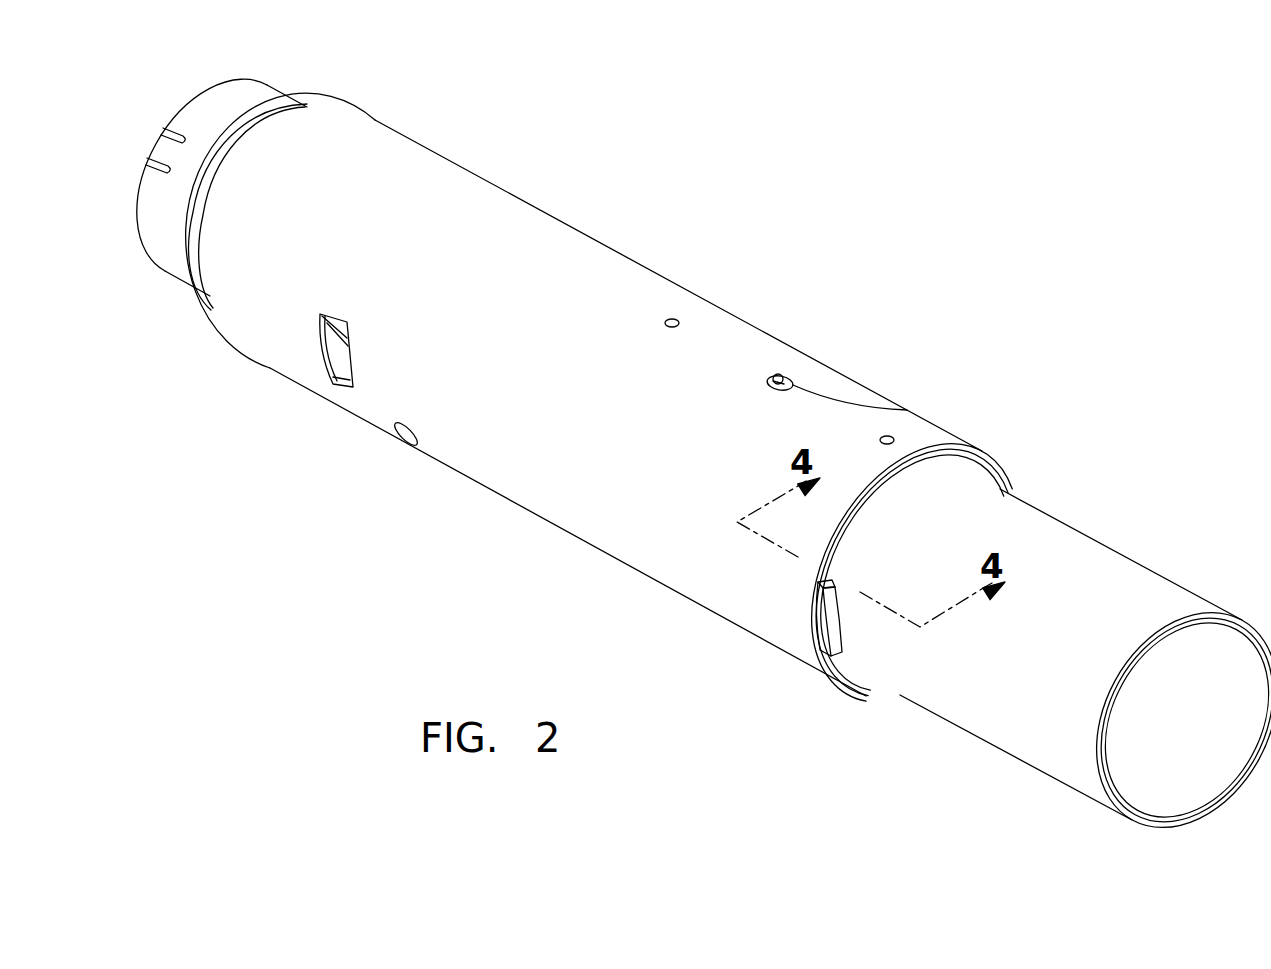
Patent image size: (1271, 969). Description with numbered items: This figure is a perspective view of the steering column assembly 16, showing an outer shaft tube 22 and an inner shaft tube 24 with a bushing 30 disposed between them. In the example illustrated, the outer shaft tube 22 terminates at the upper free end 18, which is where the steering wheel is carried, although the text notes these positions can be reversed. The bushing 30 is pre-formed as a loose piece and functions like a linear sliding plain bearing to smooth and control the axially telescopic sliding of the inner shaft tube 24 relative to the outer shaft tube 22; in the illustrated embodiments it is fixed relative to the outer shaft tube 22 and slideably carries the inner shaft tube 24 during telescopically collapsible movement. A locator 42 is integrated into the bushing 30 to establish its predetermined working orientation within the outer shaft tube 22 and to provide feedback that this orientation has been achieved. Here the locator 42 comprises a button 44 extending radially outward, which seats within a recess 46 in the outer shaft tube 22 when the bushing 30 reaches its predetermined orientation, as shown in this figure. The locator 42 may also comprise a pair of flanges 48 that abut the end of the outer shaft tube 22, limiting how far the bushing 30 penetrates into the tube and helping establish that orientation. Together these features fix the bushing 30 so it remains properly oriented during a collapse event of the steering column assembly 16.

The steering column assembly 16 is at (584, 394).
The upper free end 18 is at (200, 95).
The outer shaft tube 22 is at (688, 290).
The inner shaft tube 24 is at (1100, 550).
The bushing 30 is at (930, 564).
The locator 42 is at (833, 353).
The button 44 is at (782, 377).
The recess 46 is at (907, 410).
The flanges 48 is at (824, 628).